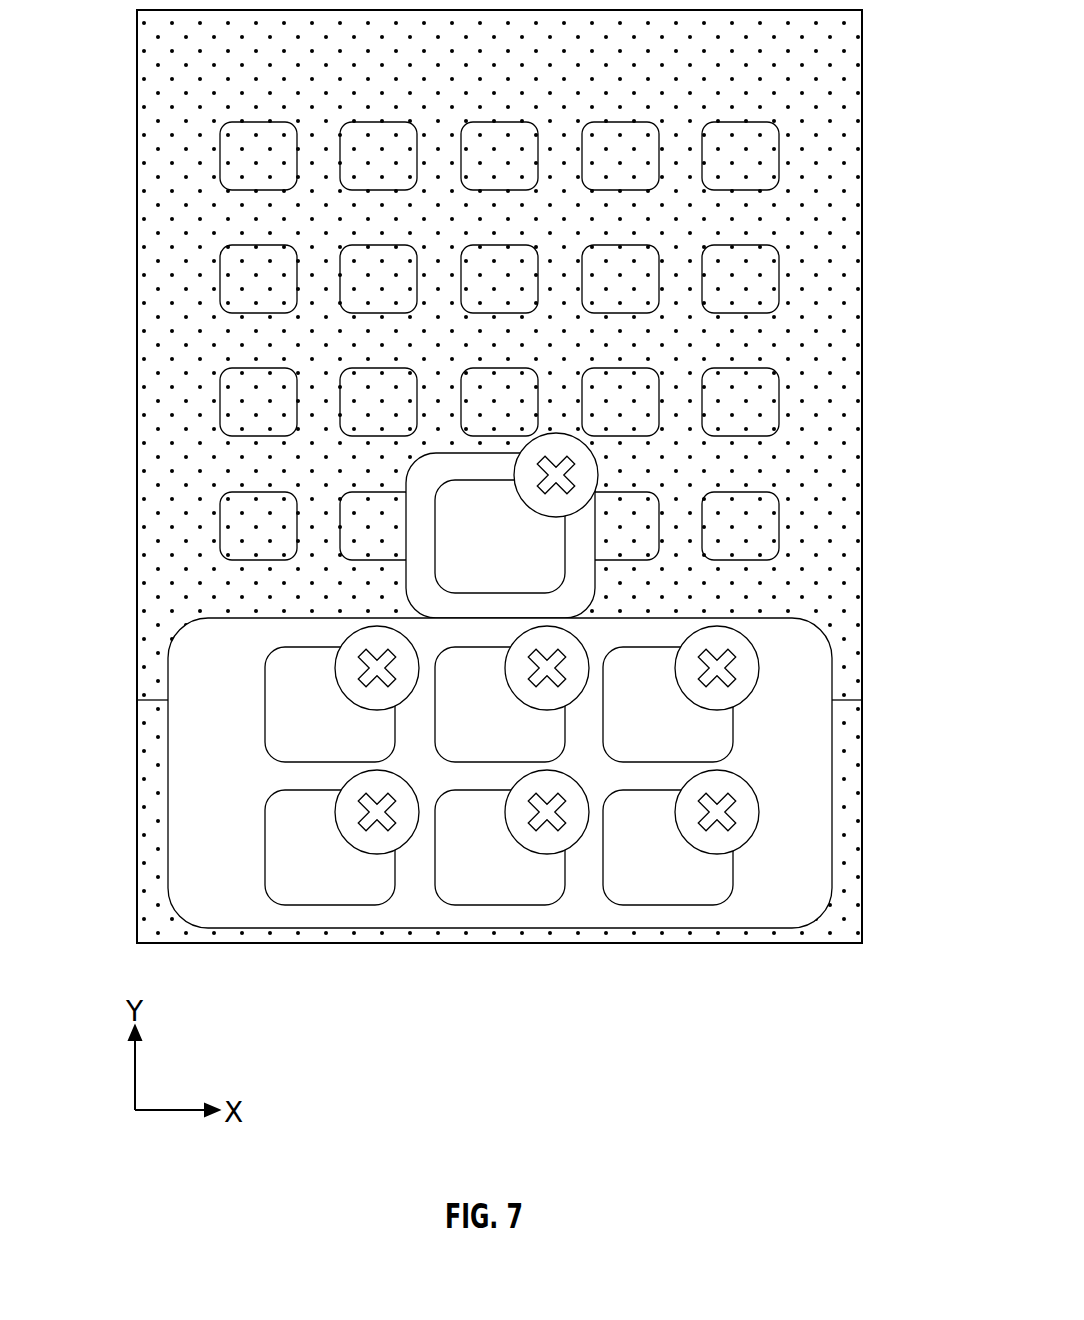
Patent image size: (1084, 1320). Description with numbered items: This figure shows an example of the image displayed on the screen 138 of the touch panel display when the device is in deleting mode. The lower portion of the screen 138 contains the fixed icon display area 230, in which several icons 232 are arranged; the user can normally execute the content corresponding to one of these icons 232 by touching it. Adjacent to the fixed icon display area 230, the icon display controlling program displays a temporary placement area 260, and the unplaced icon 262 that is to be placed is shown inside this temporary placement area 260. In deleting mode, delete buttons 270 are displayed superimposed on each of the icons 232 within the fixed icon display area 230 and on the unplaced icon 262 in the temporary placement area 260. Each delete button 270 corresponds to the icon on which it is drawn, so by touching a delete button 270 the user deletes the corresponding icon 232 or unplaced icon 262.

The screen 138 is at (150, 92).
The fixed icon display area 230 is at (818, 670).
The icon 232 is at (265, 843).
The temporary placement area 260 is at (595, 590).
The unplaced icon 262 is at (565, 547).
The delete button 270 is at (522, 450).